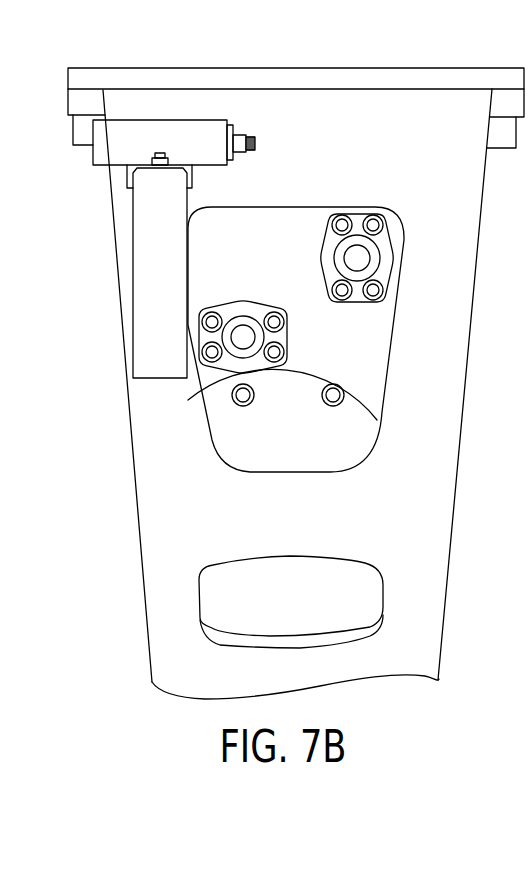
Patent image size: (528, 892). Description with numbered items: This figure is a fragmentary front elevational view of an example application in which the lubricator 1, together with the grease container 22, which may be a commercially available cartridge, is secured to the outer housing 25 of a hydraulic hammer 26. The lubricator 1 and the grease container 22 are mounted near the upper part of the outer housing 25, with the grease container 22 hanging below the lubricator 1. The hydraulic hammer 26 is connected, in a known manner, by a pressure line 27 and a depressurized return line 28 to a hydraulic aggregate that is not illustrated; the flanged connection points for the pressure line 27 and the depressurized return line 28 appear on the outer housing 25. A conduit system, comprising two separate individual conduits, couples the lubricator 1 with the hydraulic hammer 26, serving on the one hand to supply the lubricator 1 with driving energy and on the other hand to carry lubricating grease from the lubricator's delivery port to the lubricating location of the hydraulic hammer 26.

The lubricator 1 is at (187, 133).
The grease container 22 is at (148, 315).
The outer housing 25 is at (368, 536).
The hydraulic hammer 26 is at (343, 447).
The pressure line 27 is at (358, 258).
The depressurized return line 28 is at (243, 341).